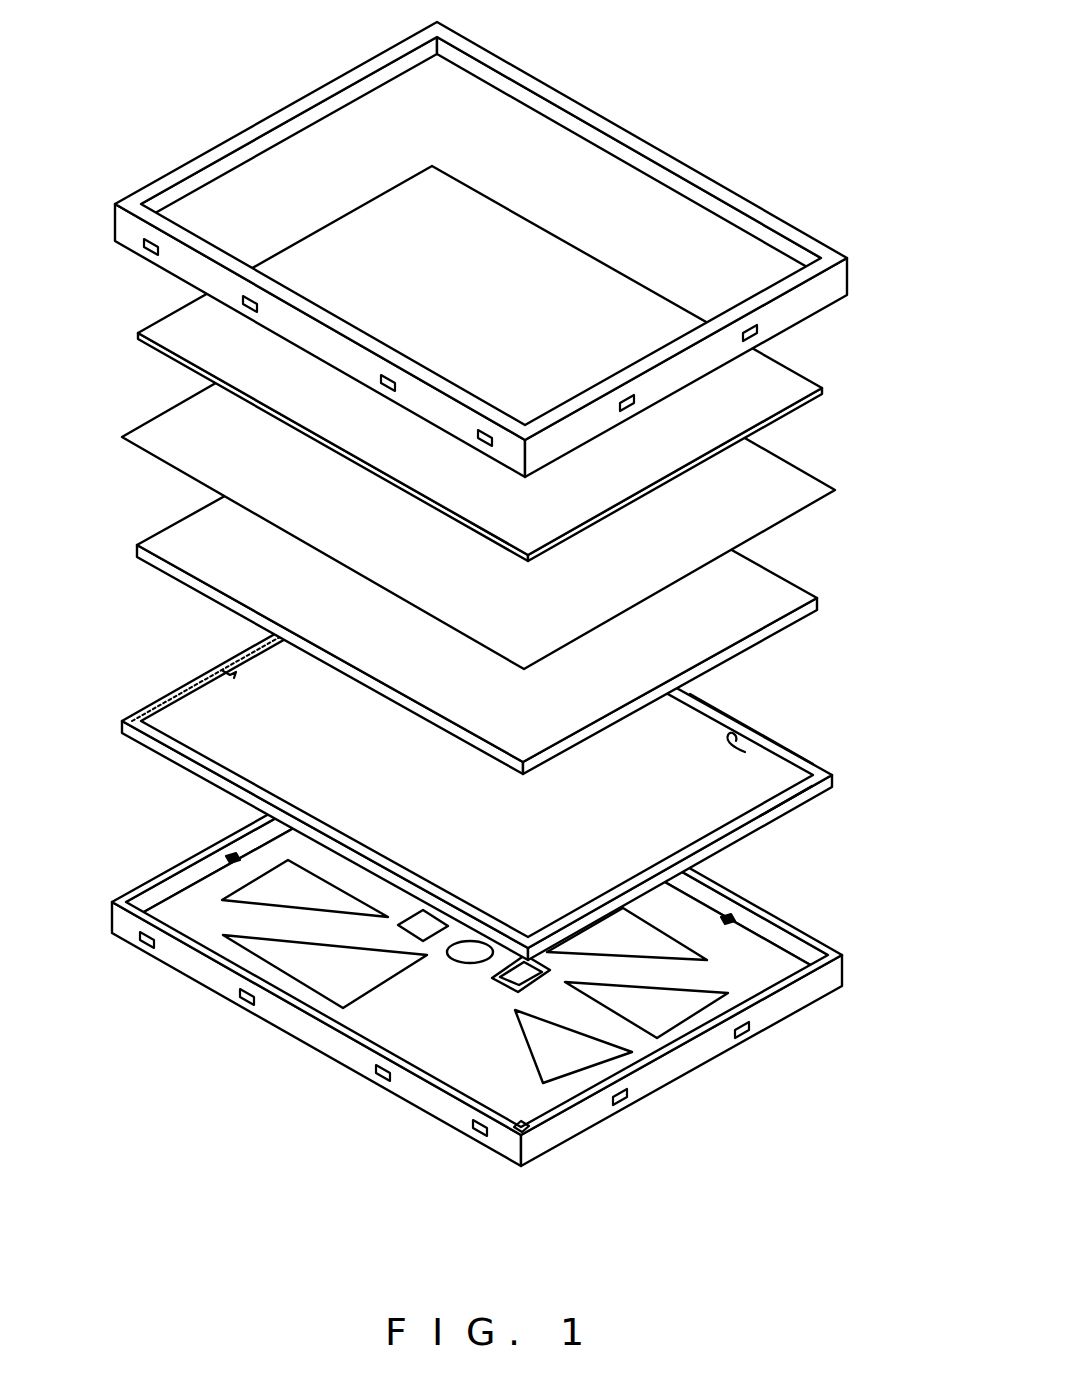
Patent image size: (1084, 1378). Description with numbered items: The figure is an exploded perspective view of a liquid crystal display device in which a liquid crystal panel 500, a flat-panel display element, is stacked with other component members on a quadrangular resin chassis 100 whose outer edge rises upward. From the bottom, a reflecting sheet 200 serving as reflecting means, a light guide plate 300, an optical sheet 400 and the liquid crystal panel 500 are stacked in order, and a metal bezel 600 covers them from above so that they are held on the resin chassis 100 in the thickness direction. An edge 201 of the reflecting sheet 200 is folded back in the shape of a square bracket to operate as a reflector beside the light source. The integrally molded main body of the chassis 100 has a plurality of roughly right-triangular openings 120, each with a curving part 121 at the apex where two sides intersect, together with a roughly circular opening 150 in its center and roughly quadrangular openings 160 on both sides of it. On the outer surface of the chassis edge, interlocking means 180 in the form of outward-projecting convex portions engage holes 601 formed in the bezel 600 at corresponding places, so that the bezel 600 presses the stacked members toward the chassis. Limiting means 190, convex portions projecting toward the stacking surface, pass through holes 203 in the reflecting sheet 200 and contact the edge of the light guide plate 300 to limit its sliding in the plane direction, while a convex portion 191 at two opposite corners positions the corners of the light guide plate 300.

The resin chassis 100 is at (841, 931).
The roughly triangle opening 120 is at (283, 900).
The curving part 121 is at (312, 968).
The roughly circular opening 150 is at (470, 957).
The roughly quadrangular opening 160 is at (513, 980).
The interlocking means 180 is at (143, 948).
The limiting means 190 is at (232, 858).
The convex portion for positioning 191 is at (527, 1136).
The reflecting sheet 200 is at (836, 751).
The edge of reflecting sheet 201 is at (702, 701).
The hole 203 is at (233, 677).
The light guide plate 300 is at (825, 581).
The optical sheet 400 is at (831, 470).
The liquid crystal panel 500 is at (822, 368).
The metal bezel 600 is at (665, 120).
The hole 601 is at (246, 304).